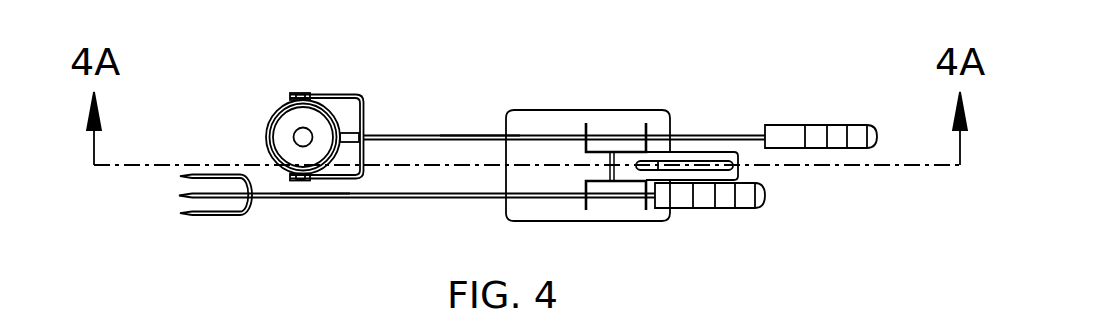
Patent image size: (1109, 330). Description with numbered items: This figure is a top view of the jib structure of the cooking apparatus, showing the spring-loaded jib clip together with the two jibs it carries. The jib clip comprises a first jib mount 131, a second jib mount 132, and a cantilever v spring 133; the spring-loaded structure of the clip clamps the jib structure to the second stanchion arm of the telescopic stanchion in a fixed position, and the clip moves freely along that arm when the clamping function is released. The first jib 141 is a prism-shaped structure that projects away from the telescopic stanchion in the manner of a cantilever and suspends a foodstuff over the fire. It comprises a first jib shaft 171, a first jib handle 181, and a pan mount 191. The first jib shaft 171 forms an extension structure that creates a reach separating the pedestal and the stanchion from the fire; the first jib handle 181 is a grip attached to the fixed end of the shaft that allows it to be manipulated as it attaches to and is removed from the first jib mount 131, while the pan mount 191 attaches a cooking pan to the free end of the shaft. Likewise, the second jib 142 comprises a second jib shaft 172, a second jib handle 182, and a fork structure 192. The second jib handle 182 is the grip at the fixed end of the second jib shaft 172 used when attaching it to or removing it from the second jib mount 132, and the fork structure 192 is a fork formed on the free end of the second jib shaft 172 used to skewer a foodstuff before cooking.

The first jib mount 131 is at (650, 131).
The second jib mount 132 is at (647, 210).
The cantilever v spring 133 is at (702, 157).
The first jib 141 is at (380, 134).
The second jib 142 is at (420, 197).
The first jib shaft 171 is at (457, 135).
The second jib shaft 172 is at (312, 197).
The first jib handle 181 is at (857, 127).
The second jib handle 182 is at (762, 207).
The pan mount 191 is at (330, 97).
The fork structure 192 is at (203, 215).